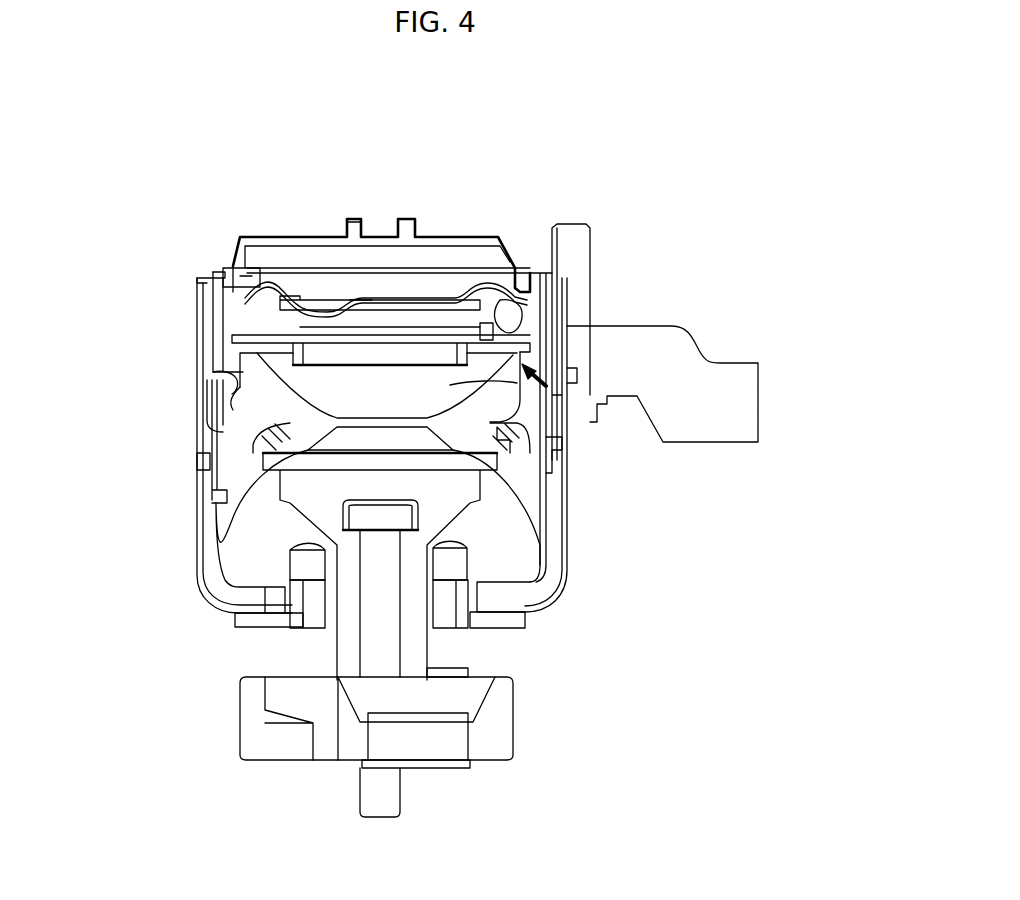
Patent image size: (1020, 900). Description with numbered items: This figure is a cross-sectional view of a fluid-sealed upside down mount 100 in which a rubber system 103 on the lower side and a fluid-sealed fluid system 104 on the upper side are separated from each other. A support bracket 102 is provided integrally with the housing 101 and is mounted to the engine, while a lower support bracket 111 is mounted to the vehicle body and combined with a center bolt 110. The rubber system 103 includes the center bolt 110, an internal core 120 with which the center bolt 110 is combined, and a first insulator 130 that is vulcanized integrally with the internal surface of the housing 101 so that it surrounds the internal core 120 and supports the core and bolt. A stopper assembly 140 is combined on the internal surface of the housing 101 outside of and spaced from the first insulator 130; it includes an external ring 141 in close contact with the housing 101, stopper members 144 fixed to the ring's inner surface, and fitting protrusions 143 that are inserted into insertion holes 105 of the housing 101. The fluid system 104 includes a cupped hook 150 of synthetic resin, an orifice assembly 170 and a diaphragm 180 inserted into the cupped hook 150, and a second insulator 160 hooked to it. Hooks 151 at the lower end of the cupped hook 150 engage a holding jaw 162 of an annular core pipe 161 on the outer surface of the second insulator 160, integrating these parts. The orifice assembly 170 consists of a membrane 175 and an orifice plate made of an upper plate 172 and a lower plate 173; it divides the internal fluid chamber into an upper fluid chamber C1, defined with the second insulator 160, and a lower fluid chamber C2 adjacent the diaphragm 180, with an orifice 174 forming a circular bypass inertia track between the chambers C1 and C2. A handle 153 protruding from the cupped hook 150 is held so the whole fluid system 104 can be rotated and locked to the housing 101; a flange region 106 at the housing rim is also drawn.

The upside down mount 100 is at (620, 231).
The housing 101 is at (565, 555).
The support bracket 102 is at (690, 326).
The rubber system 103 is at (560, 520).
The fluid system 104 is at (246, 404).
The insertion holes 105 is at (205, 460).
The housing flange 106 is at (210, 276).
The center bolt 110 is at (390, 632).
The lower support bracket 111 is at (497, 727).
The internal core 120 is at (325, 500).
The first insulator 130 is at (248, 550).
The stopper assembly 140 is at (233, 503).
The external ring 141 is at (560, 440).
The fitting protrusions 143 is at (560, 478).
The stopper members 144 is at (552, 509).
The cupped hook 150 is at (218, 305).
The hooks 151 is at (216, 396).
The handle 153 is at (350, 226).
The second insulator 160 is at (276, 400).
The core pipe 161 is at (236, 308).
The holding jaw 162 is at (232, 382).
The orifice assembly 170 is at (388, 182).
The upper plate 172 is at (500, 300).
The lower plate 173 is at (478, 330).
The orifice 174 is at (553, 265).
The membrane 175 is at (357, 300).
The diaphragm 180 is at (414, 250).
The upper fluid chamber C1 is at (512, 336).
The lower fluid chamber C2 is at (268, 357).